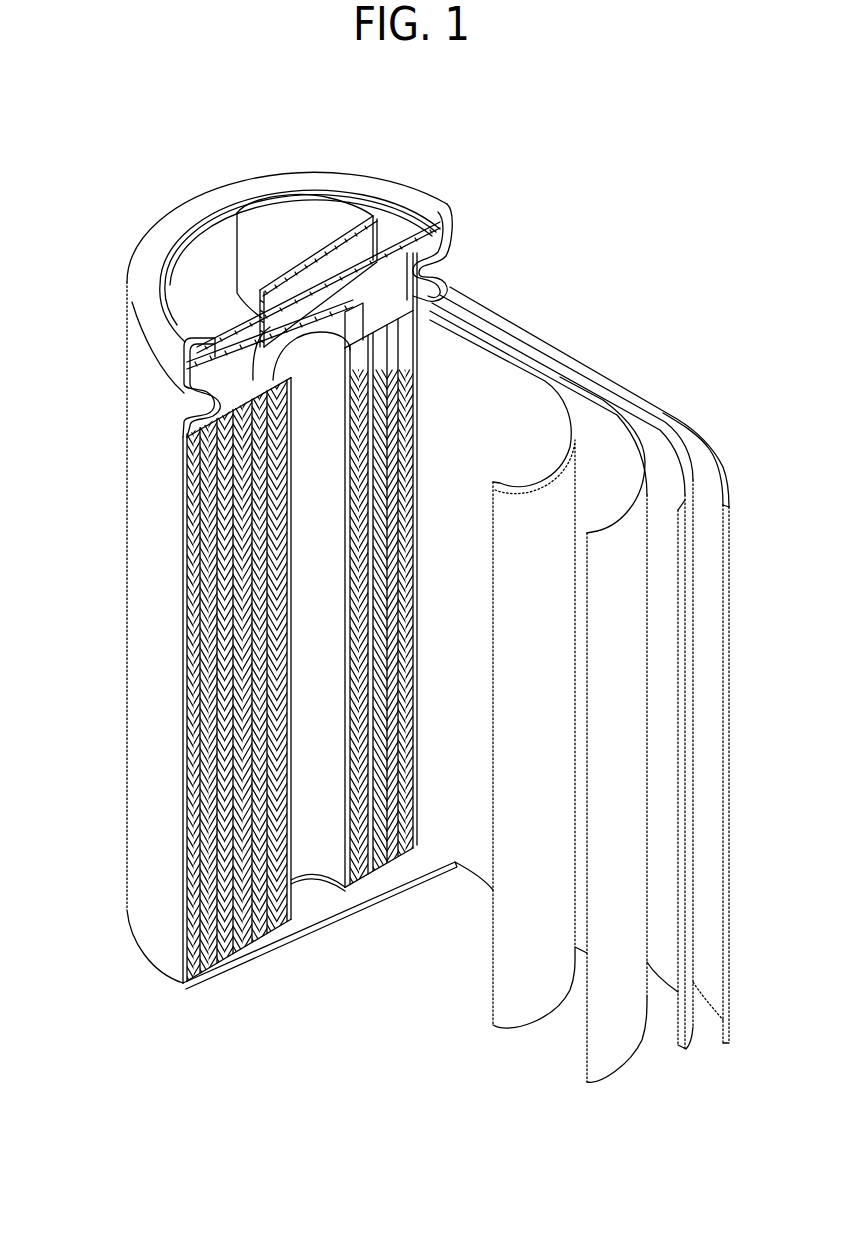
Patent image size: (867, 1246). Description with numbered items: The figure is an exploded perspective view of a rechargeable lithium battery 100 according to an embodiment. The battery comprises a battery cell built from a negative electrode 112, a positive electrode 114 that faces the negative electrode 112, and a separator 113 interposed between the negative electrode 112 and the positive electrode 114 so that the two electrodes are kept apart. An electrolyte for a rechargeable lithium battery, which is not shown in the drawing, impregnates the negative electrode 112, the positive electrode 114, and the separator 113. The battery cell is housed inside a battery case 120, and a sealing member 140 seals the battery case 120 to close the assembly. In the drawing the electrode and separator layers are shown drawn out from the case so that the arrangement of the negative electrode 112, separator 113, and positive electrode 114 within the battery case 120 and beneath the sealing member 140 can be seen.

The rechargeable lithium battery 100 is at (441, 180).
The negative electrode 112 is at (722, 472).
The separator 113 is at (480, 343).
The positive electrode 114 is at (597, 420).
The battery case 120 is at (150, 681).
The sealing member 140 is at (290, 222).